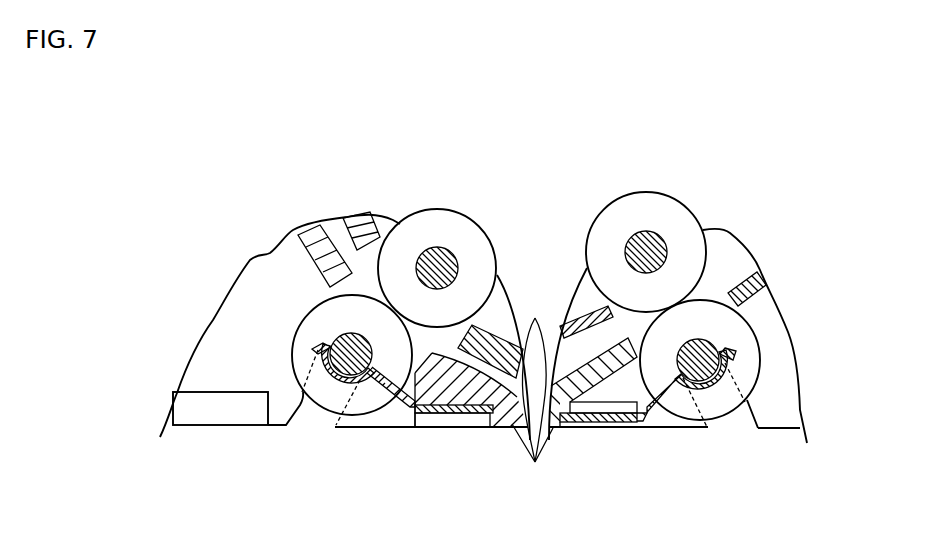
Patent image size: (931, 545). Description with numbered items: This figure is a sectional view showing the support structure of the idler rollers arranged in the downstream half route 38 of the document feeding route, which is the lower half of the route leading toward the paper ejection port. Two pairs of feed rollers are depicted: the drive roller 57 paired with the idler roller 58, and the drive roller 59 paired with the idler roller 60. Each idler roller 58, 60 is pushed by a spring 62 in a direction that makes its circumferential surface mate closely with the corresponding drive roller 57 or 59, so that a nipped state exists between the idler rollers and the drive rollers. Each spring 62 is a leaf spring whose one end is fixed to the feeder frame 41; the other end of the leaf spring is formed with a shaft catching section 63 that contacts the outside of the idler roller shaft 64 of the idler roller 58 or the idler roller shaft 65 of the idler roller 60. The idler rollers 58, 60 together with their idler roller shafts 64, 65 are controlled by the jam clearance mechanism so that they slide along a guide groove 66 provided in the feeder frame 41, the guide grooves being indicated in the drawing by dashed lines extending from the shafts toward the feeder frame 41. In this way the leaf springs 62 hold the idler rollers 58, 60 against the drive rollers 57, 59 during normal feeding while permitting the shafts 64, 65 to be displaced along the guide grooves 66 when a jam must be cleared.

The downstream half route 38 is at (565, 362).
The feeder frame 41 is at (535, 462).
The drive roller 57 is at (437, 210).
The idler roller 58 is at (290, 337).
The drive roller 59 is at (673, 200).
The idler roller 60 is at (743, 325).
The spring 62 is at (415, 410).
The shaft catching section 63 is at (353, 347).
The idler roller shaft 64 is at (342, 333).
The idler roller shaft 65 is at (707, 340).
The guide groove 66 is at (302, 412).